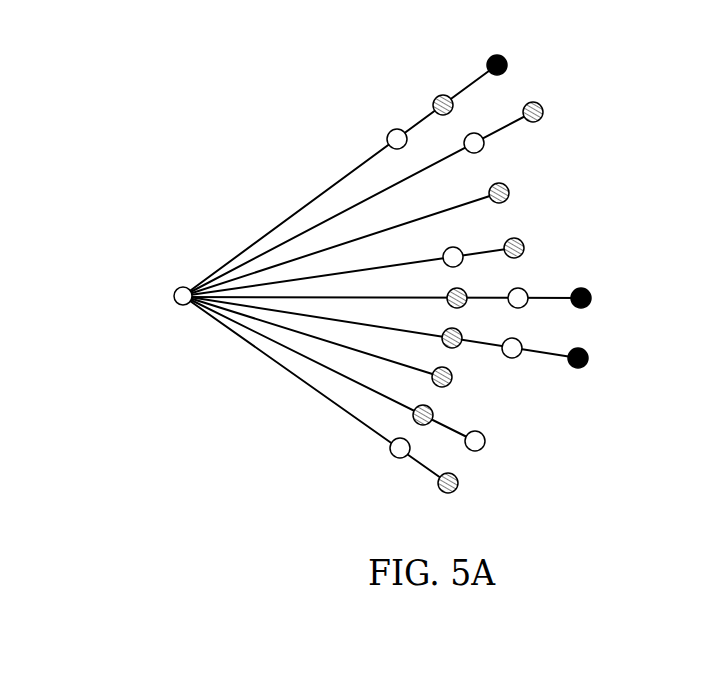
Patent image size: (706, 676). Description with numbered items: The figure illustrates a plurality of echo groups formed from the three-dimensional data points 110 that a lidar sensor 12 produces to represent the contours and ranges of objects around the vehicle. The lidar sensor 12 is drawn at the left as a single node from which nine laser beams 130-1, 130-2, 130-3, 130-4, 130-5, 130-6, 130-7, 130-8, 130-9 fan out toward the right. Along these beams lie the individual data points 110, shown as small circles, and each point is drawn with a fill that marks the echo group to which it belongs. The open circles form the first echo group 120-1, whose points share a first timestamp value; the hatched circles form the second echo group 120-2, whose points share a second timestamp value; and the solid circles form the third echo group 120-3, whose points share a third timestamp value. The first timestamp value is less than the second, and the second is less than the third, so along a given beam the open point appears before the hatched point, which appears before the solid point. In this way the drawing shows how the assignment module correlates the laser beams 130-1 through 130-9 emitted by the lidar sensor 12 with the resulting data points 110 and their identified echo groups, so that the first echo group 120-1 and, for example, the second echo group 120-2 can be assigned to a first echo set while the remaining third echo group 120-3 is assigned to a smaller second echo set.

The 3D data points 110 is at (248, 60).
The lidar sensor 12 is at (174, 295).
The first echo group 120-1 is at (389, 131).
The second echo group 120-2 is at (435, 98).
The third echo group 120-3 is at (488, 61).
The laser beam 130-1 is at (290, 217).
The laser beam 130-2 is at (358, 203).
The laser beam 130-3 is at (263, 270).
The laser beam 130-4 is at (237, 288).
The laser beam 130-5 is at (287, 297).
The laser beam 130-6 is at (332, 320).
The laser beam 130-7 is at (370, 354).
The laser beam 130-8 is at (467, 432).
The laser beam 130-9 is at (437, 481).